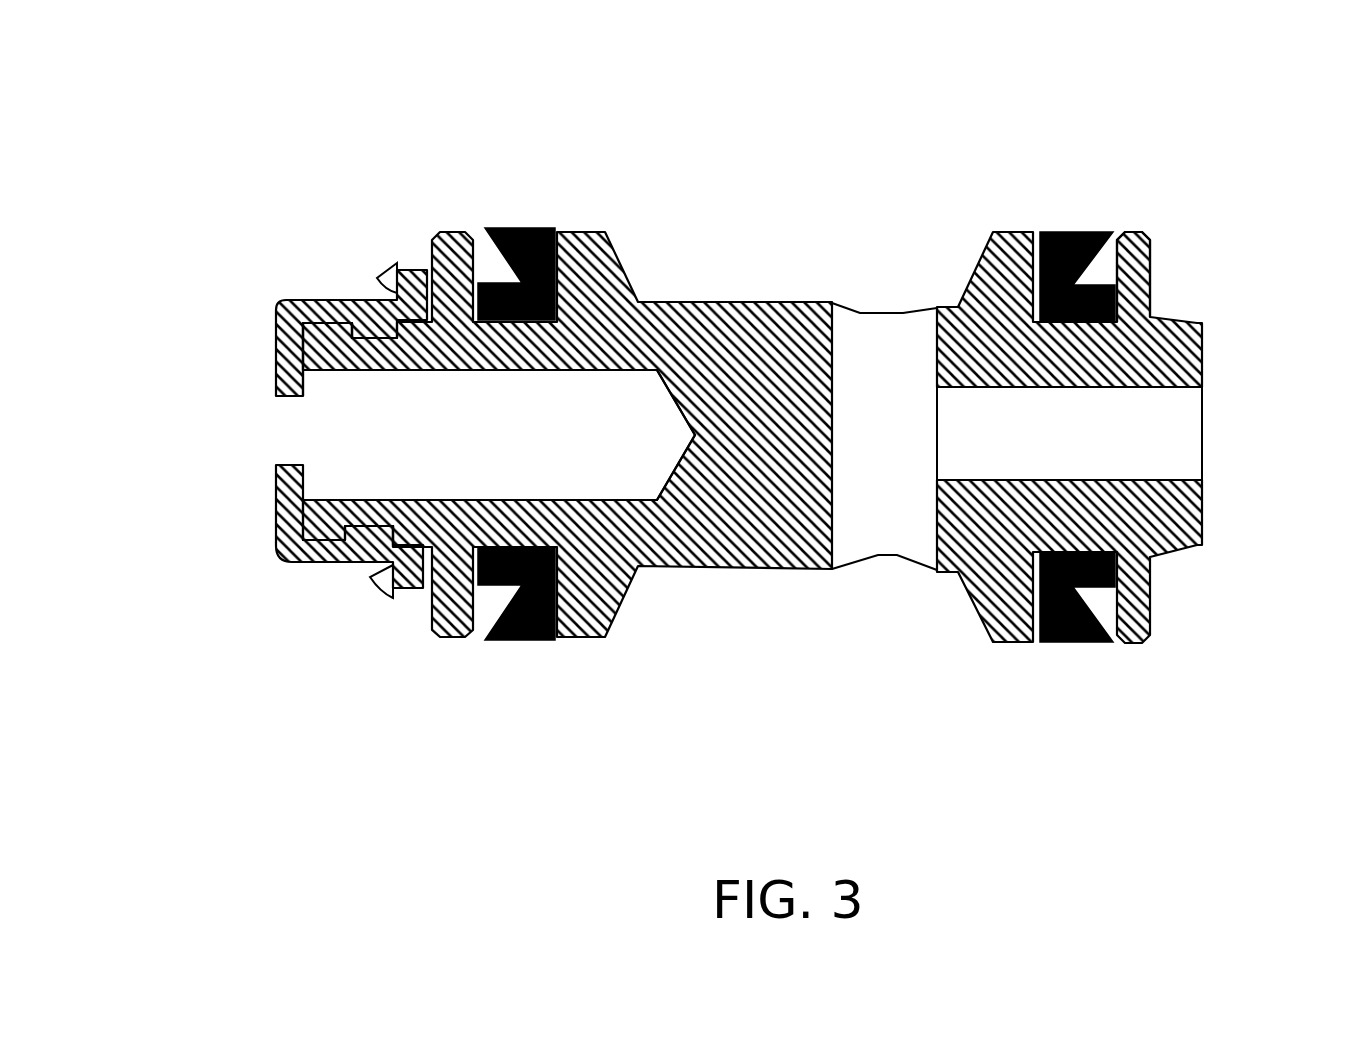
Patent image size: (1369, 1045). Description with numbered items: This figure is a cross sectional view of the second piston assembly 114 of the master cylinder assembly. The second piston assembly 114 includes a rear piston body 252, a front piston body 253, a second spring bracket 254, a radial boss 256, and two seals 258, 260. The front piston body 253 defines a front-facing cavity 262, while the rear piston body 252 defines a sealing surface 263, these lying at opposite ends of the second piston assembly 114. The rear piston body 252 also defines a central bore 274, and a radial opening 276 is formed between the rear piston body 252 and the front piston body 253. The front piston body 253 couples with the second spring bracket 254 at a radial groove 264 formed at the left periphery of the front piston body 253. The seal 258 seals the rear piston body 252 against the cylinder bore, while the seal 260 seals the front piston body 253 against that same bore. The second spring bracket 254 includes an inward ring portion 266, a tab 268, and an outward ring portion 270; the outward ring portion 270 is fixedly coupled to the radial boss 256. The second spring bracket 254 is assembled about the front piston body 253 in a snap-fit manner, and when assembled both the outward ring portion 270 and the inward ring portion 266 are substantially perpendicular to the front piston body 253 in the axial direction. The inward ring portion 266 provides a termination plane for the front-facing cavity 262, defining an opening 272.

The second piston assembly 114 is at (186, 142).
The rear piston body 252 is at (1147, 232).
The front piston body 253 is at (735, 570).
The second spring bracket 254 is at (268, 385).
The radial boss 256 is at (397, 265).
The seal 258 is at (1077, 230).
The seal 260 is at (530, 228).
The front-facing cavity 262 is at (590, 454).
The sealing surface 263 is at (1205, 347).
The radial groove 264 is at (380, 505).
The inward ring portion 266 is at (305, 385).
The tab 268 is at (350, 345).
The outward ring portion 270 is at (403, 590).
The opening 272 is at (293, 400).
The central bore 274 is at (1178, 387).
The radial opening 276 is at (872, 318).